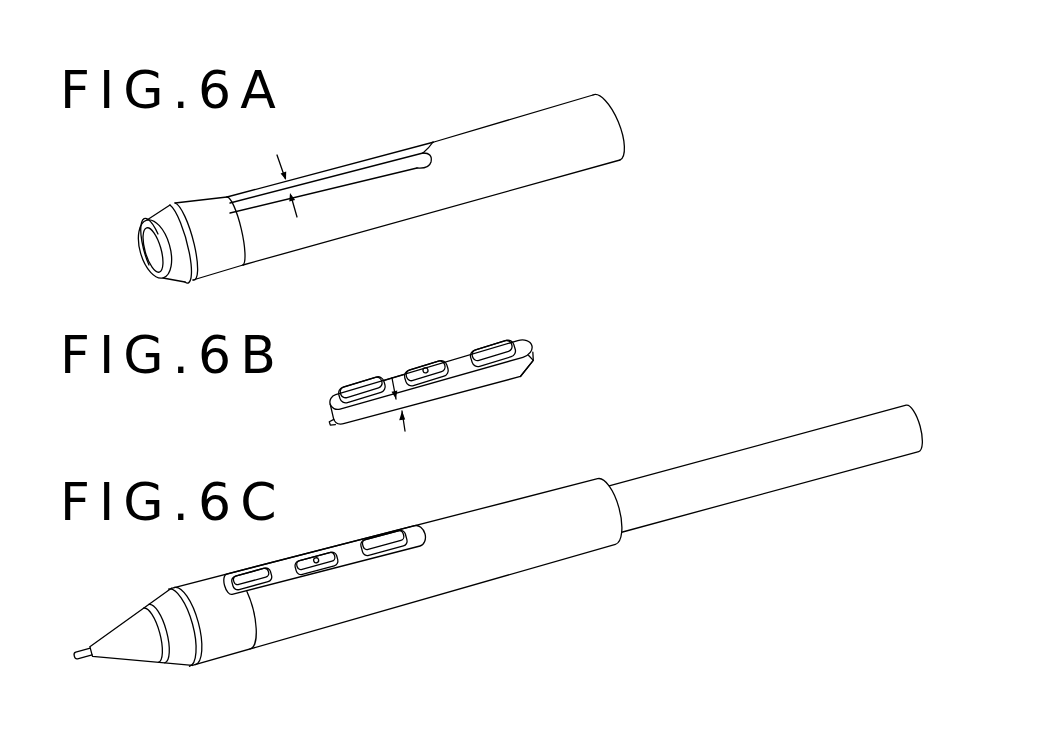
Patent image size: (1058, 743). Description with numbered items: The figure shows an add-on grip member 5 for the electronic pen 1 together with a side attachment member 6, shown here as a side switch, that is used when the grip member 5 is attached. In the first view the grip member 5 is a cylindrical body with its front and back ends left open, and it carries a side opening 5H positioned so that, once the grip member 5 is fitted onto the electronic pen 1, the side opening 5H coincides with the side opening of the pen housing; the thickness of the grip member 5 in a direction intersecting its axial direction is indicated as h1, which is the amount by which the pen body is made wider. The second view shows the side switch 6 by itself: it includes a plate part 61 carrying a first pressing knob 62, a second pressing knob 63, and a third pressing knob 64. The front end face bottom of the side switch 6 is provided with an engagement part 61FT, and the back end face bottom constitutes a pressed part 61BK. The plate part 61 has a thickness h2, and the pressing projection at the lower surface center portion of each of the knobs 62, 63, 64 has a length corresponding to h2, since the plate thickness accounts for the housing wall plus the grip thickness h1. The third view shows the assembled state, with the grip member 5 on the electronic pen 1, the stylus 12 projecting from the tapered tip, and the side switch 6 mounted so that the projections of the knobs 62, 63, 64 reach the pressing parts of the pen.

In FIG. 6C, the electronic pen 1 is at (760, 445).
In FIG. 6A, the grip member 5 is at (543, 165).
In FIG. 6C, the grip member 5 is at (522, 558).
In FIG. 6A, the side opening 5H is at (364, 169).
In FIG. 6B, the side attachment member 6 is at (438, 316).
In FIG. 6C, the side attachment member 6 is at (344, 553).
In FIG. 6B, the plate part 61 is at (455, 388).
In FIG. 6B, the engagement part 61FT is at (328, 420).
In FIG. 6B, the pressed part 61BK is at (535, 350).
In FIG. 6B, the first pressing knob 62 is at (360, 388).
In FIG. 6C, the first pressing knob 62 is at (240, 580).
In FIG. 6B, the second pressing knob 63 is at (412, 367).
In FIG. 6C, the second pressing knob 63 is at (302, 560).
In FIG. 6B, the third pressing knob 64 is at (493, 348).
In FIG. 6C, the third pressing knob 64 is at (368, 545).
In FIG. 6C, the stylus 12 is at (77, 653).
In FIG. 6A, the thickness of the grip member h1 is at (291, 180).
In FIG. 6B, the thickness of the plate part h2 is at (404, 431).